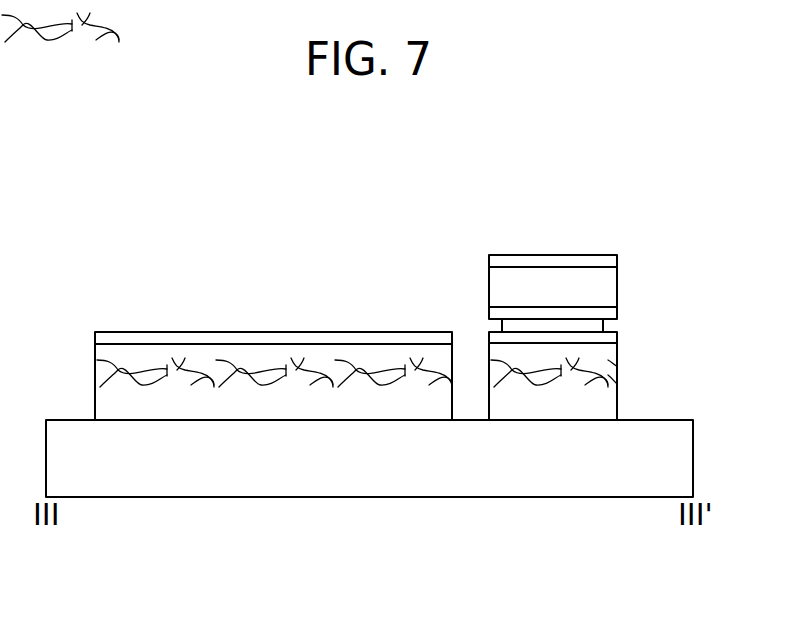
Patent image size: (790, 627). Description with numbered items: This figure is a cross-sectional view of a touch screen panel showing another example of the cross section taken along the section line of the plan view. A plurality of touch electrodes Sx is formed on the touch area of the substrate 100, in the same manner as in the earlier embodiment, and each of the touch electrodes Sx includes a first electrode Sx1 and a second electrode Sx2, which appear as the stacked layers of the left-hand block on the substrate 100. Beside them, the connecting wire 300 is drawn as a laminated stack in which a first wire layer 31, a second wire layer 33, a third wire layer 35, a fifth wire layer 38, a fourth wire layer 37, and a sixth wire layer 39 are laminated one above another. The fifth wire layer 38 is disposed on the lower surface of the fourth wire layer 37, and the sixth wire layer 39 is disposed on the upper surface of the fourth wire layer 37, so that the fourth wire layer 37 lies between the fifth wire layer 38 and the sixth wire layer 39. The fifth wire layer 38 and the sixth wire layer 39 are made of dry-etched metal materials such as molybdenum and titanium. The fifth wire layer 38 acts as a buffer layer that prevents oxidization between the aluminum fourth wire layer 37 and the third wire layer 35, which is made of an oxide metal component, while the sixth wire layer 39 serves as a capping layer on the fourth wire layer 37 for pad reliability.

The substrate 100 is at (406, 476).
The touch electrodes Sx is at (343, 557).
The first electrode Sx1 is at (268, 402).
The second electrode Sx2 is at (321, 337).
The connecting wire 300 is at (582, 190).
The first wire layer 31 is at (516, 402).
The second wire layer 33 is at (535, 338).
The third wire layer 35 is at (561, 325).
The fourth wire layer 37 is at (583, 297).
The fifth wire layer 38 is at (521, 313).
The sixth wire layer 39 is at (569, 257).